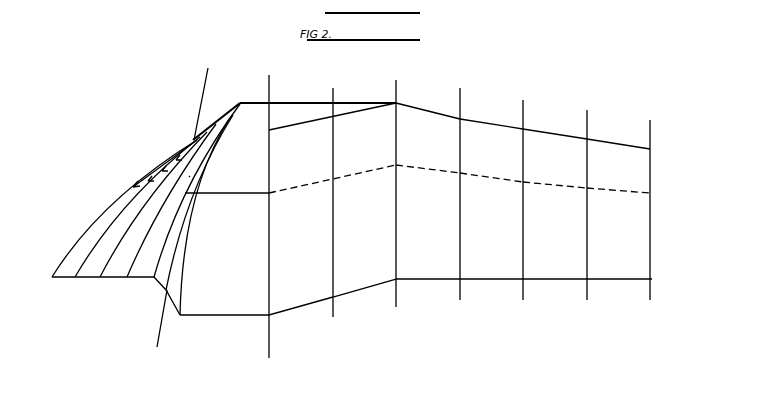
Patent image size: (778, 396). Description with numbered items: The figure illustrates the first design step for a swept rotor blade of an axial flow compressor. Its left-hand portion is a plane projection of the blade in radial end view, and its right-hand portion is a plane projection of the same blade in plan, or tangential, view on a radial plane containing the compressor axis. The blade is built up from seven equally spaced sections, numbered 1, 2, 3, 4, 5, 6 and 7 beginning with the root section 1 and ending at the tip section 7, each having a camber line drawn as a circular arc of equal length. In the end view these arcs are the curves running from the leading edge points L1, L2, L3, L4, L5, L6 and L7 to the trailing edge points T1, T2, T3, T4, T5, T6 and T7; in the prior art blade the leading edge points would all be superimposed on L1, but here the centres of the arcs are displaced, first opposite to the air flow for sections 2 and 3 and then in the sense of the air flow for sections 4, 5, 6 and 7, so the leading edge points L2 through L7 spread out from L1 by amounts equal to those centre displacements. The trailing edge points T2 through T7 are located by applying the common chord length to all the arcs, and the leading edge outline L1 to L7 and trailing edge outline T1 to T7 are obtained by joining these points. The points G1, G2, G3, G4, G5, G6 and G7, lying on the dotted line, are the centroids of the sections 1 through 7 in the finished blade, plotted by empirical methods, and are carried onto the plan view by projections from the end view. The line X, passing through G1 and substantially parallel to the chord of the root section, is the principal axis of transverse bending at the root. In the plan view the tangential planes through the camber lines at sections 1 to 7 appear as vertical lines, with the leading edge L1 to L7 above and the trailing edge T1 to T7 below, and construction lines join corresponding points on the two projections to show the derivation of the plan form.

The root section 1 is at (225, 216).
The section 2 is at (253, 202).
The section 3 is at (280, 193).
The section 4 is at (299, 194).
The section 5 is at (317, 200).
The section 6 is at (336, 205).
The tip section 7 is at (357, 210).
The leading edge point at root section L1 is at (311, 120).
The leading edge point at section 2 L2 is at (289, 112).
The leading edge point at section 3 L3 is at (301, 113).
The leading edge point at section 4 L4 is at (347, 108).
The leading edge point at section 5 L5 is at (370, 120).
The leading edge point at section 6 L6 is at (395, 131).
The leading edge point at tip section L7 is at (419, 133).
The centroid of root section G1 is at (186, 194).
The centroid of section 2 G2 is at (189, 176).
The centroid of section 3 G3 is at (194, 168).
The centroid of section 4 G4 is at (328, 161).
The centroid of section 5 G5 is at (370, 174).
The centroid of section 6 G6 is at (393, 185).
The centroid of tip section G7 is at (383, 195).
The trailing edge point at root section T1 is at (243, 303).
The trailing edge point at section 2 T2 is at (277, 294).
The trailing edge point at section 3 T3 is at (256, 285).
The trailing edge point at section 4 T4 is at (321, 286).
The trailing edge point at section 5 T5 is at (340, 286).
The trailing edge point at section 6 T6 is at (359, 286).
The trailing edge point at tip section T7 is at (354, 286).
The principal bending axis X is at (178, 206).